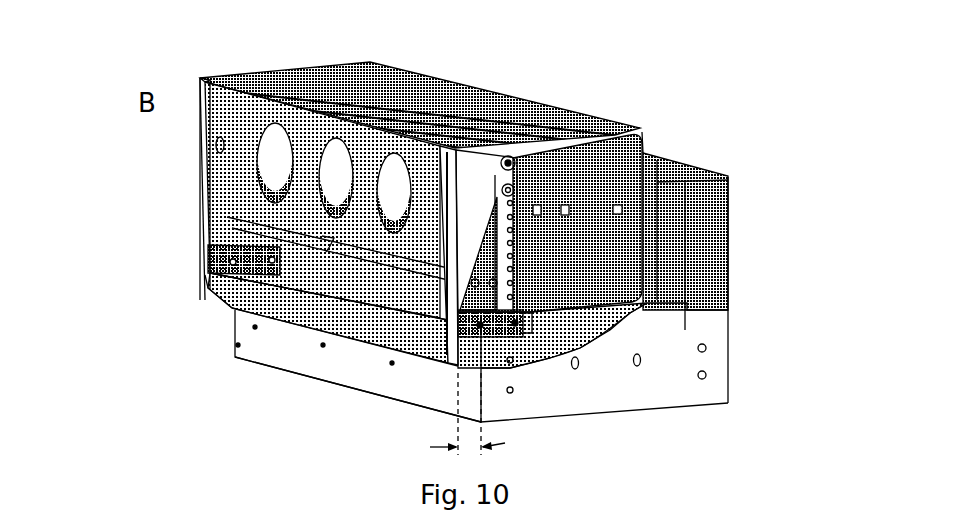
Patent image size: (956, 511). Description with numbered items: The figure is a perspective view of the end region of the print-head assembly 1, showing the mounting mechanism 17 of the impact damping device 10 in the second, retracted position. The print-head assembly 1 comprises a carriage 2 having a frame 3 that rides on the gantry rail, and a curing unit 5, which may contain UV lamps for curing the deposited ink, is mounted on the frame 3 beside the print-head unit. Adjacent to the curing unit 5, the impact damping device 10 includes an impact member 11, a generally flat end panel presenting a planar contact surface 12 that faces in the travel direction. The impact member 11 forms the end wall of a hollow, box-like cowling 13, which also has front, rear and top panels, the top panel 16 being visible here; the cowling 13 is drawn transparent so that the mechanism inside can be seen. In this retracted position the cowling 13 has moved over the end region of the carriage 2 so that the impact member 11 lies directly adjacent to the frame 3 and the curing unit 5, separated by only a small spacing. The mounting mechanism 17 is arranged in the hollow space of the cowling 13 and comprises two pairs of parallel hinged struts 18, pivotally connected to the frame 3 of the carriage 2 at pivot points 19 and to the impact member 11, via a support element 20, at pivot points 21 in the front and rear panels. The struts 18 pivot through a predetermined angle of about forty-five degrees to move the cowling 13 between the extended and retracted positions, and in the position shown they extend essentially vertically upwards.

The print-head assembly 1 is at (748, 448).
The carriage 2 is at (728, 144).
The frame 3 is at (605, 398).
The curing unit 5 is at (562, 354).
The impact damping device 10 is at (176, 318).
The impact member 11 is at (305, 316).
The contact surface 12 is at (218, 243).
The cowling 13 is at (194, 72).
The top panel 16 is at (365, 70).
The mounting mechanism 17 is at (450, 318).
The hinged struts 18 is at (470, 268).
The pivot points 19 is at (481, 327).
The support element 20 is at (232, 176).
The pivot points 21 is at (460, 142).